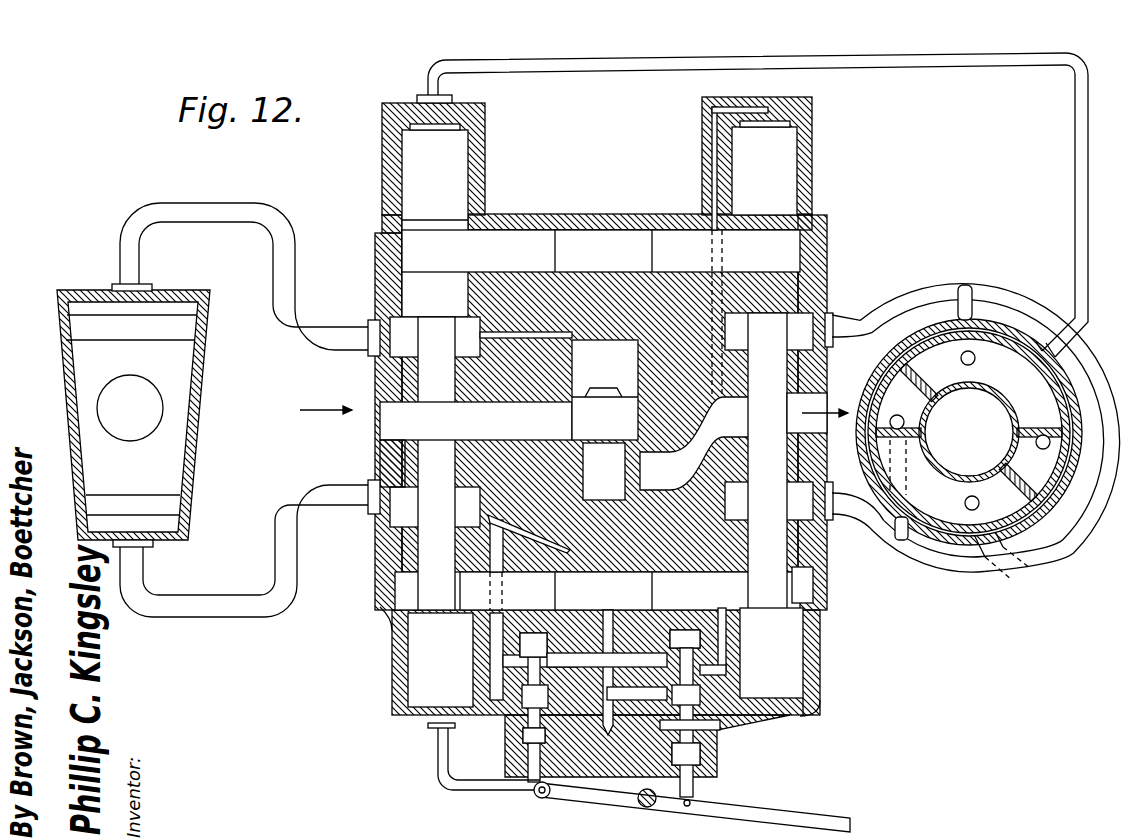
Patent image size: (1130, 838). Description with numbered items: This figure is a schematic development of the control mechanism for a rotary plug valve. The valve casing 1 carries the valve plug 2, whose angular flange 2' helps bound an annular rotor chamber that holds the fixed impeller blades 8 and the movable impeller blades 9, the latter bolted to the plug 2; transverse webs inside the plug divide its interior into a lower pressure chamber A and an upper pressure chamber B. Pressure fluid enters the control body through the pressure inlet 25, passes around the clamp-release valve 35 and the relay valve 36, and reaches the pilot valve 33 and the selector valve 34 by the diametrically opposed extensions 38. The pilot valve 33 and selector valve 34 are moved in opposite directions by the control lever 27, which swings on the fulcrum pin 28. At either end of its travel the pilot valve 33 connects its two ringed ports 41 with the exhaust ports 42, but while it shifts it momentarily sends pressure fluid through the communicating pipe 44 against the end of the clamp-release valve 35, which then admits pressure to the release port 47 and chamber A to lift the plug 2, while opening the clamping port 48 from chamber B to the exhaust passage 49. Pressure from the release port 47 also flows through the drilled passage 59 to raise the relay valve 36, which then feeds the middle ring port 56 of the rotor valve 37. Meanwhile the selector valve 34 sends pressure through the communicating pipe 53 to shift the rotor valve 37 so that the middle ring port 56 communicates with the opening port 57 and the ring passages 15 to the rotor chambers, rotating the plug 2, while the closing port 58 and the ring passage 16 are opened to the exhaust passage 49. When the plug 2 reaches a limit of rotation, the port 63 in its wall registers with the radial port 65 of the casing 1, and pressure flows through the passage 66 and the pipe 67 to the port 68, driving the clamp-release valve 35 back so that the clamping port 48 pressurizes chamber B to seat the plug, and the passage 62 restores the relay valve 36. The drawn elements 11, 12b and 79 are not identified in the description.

The valve casing 1 is at (880, 356).
The valve plug 2 is at (483, 415).
The angular flange 2' is at (969, 432).
The fixed impeller blades 8 is at (918, 371).
The movable impeller blades 9 is at (1052, 428).
The inner rim 11 is at (879, 375).
The passage 12b is at (817, 412).
The ring passages 15 is at (930, 568).
The ring passage 16 is at (914, 287).
The pressure inlet 25 is at (385, 418).
The control lever 27 is at (672, 805).
The fulcrum pin 28 is at (640, 806).
The pilot valve 33 is at (540, 707).
The selector valve 34 is at (692, 704).
The clamp-release valve 35 is at (412, 466).
The relay valve 36 is at (605, 402).
The rotor valve 37 is at (748, 451).
The diametrically opposed extensions 38 is at (500, 667).
The ringed ports 41 is at (500, 683).
The exhaust ports 42 is at (520, 648).
The communicating pipe 44 is at (484, 759).
The release port 47 is at (368, 510).
The clamping port 48 is at (370, 350).
The exhaust passage 49 is at (601, 420).
The communicating pipe 53 is at (780, 722).
The middle ring port 56 is at (769, 461).
The opening port 57 is at (831, 526).
The closing port 58 is at (829, 312).
The drilled passage 59 is at (574, 537).
The passage 62 is at (565, 336).
The port 63 is at (1040, 360).
The radial port 65 is at (1058, 355).
The passage 66 is at (1020, 349).
The pipe 67 is at (1088, 283).
The port 68 is at (436, 110).
The channel 79 is at (712, 131).
The lower pressure chamber A is at (167, 523).
The upper pressure chamber B is at (155, 306).